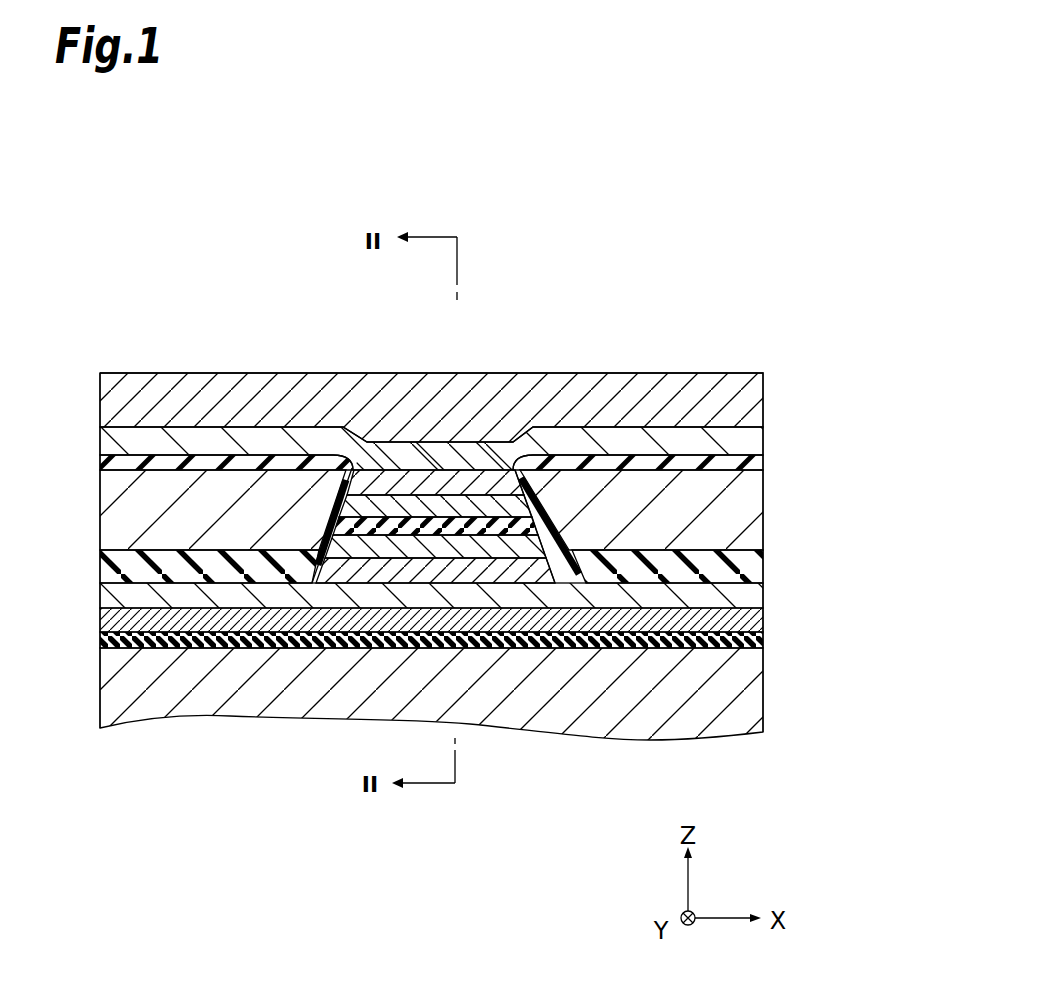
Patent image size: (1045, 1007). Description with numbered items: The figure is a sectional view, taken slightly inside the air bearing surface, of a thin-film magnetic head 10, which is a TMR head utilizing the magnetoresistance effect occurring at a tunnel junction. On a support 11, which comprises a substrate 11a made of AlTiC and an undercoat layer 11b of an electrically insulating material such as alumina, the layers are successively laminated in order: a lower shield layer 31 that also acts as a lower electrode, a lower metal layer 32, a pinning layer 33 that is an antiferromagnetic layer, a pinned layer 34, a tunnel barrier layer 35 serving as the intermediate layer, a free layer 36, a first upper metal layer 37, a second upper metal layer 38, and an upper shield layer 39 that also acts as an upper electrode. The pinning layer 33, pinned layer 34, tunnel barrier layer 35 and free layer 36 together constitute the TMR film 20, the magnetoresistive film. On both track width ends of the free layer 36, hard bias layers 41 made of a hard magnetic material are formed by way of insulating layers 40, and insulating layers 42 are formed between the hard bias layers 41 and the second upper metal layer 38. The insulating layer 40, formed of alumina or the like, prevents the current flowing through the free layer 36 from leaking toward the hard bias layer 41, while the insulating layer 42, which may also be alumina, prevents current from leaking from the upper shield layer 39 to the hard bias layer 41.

The thin-film magnetic head 10 is at (727, 289).
The support 11 is at (494, 686).
The substrate 11a is at (843, 653).
The undercoat layer 11b is at (763, 646).
The TMR film 20 is at (435, 426).
The lower shield layer 31 is at (763, 625).
The lower metal layer 32 is at (763, 596).
The pinning layer 33 is at (510, 568).
The pinned layer 34 is at (473, 542).
The tunnel barrier layer 35 is at (441, 535).
The free layer 36 is at (403, 505).
The first upper metal layer 37 is at (367, 475).
The second upper metal layer 38 is at (517, 450).
The upper shield layer 39 is at (250, 377).
The insulating layer 40 is at (100, 568).
The hard bias layer 41 is at (100, 505).
The insulating layer 42 is at (100, 458).